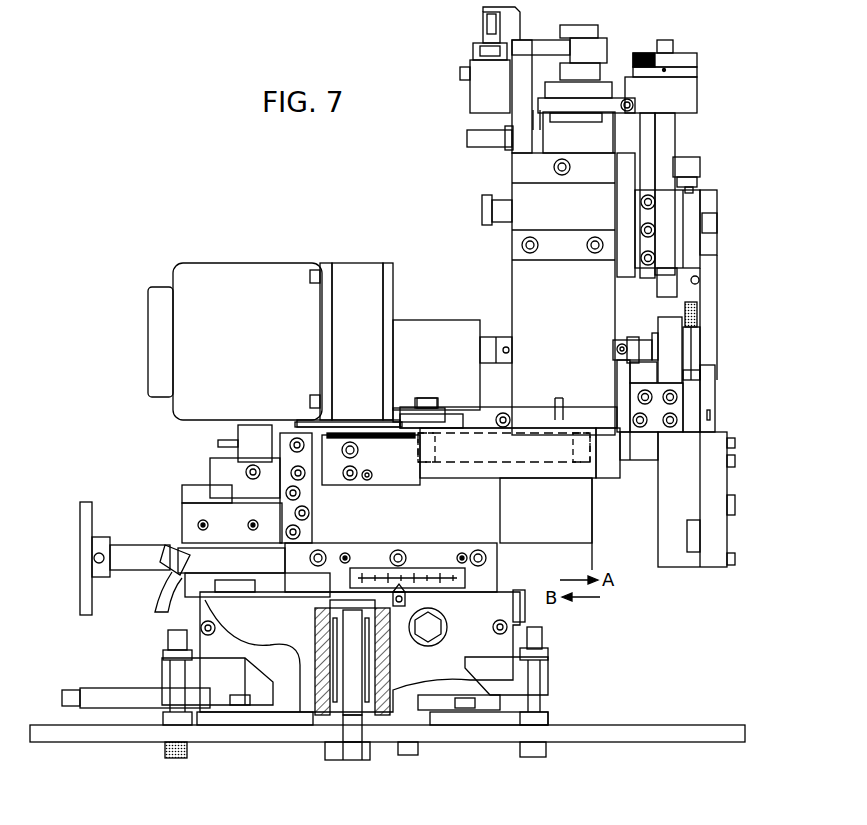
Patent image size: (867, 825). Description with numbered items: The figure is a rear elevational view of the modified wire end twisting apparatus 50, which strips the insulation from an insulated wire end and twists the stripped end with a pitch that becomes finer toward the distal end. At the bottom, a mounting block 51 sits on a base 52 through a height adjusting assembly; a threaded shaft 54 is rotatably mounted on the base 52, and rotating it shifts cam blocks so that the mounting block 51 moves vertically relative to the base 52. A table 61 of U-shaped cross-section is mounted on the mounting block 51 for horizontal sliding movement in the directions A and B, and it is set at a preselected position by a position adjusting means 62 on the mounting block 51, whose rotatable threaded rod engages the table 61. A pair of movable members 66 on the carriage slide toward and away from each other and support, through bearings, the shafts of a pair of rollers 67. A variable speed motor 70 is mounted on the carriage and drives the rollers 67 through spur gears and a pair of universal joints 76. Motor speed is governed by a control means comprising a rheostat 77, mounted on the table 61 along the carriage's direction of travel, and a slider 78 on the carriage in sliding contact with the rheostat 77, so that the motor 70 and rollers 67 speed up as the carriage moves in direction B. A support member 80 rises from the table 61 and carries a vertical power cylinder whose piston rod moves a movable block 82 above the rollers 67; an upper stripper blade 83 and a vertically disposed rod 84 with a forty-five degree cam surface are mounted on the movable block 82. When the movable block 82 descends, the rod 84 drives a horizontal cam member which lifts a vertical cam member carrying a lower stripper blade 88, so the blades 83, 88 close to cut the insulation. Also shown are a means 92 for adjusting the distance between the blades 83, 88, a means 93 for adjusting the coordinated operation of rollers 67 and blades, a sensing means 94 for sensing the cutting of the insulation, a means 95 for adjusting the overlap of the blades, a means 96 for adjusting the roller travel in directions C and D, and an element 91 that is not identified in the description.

The wire end twisting apparatus 50 is at (422, 172).
The mounting block 51 is at (540, 622).
The base 52 is at (684, 725).
The threaded shaft 54 is at (140, 690).
The table 61 is at (592, 548).
The position adjusting means 62 is at (133, 538).
The movable member 66 is at (660, 325).
The roller 67 is at (690, 362).
The variable speed motor 70 is at (228, 272).
The universal joint 76 is at (616, 340).
The rheostat 77 is at (496, 463).
The slider 78 is at (612, 480).
The support member 80 is at (520, 280).
The movable block 82 is at (713, 206).
The upper stripper blade 83 is at (700, 282).
The rod 84 is at (708, 304).
The lower stripper blade 88 is at (692, 393).
The vertical post 91 is at (668, 133).
The means for adjusting the distance between the upper and lower stripper blades 92 is at (700, 168).
The means for adjusting the coordinate operation of rollers and blades 93 is at (676, 60).
The sensing means 94 is at (470, 63).
The means for adjusting the overlapping of the upper and lower blades 95 is at (482, 204).
The means for adjusting the distance of movement of the rollers 96 is at (192, 492).